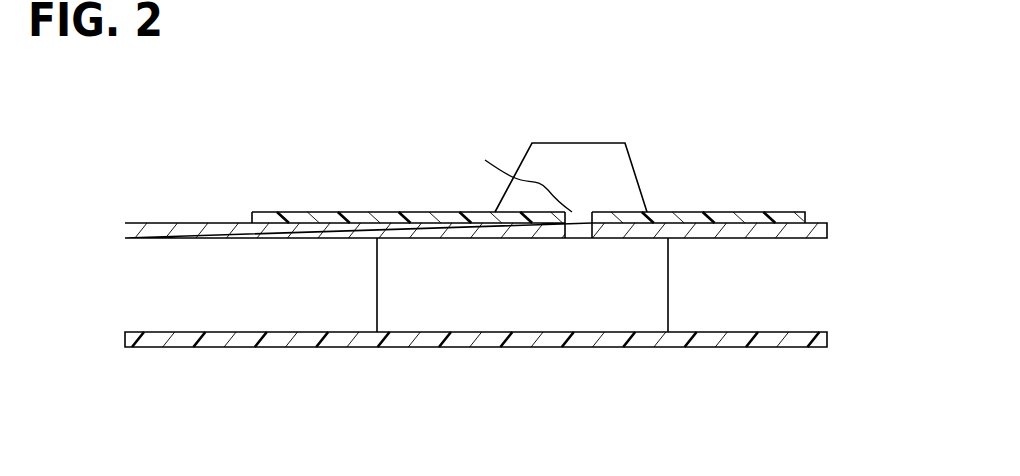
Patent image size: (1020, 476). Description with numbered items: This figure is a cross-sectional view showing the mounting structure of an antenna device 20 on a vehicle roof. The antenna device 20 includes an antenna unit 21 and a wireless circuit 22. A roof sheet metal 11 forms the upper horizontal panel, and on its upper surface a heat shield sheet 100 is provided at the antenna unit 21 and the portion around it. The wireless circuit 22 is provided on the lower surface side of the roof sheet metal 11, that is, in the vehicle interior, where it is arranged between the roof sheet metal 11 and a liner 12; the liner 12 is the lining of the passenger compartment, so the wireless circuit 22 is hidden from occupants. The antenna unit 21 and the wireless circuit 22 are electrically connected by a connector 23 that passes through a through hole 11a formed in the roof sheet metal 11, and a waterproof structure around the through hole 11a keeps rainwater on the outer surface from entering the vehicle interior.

The heat shield sheet 100 is at (288, 206).
The roof sheet metal 11 is at (199, 222).
The through hole 11a is at (590, 215).
The liner 12 is at (199, 332).
The antenna device 20 is at (527, 143).
The antenna unit 21 is at (563, 143).
The wireless circuit 22 is at (377, 279).
The connector 23 is at (520, 172).